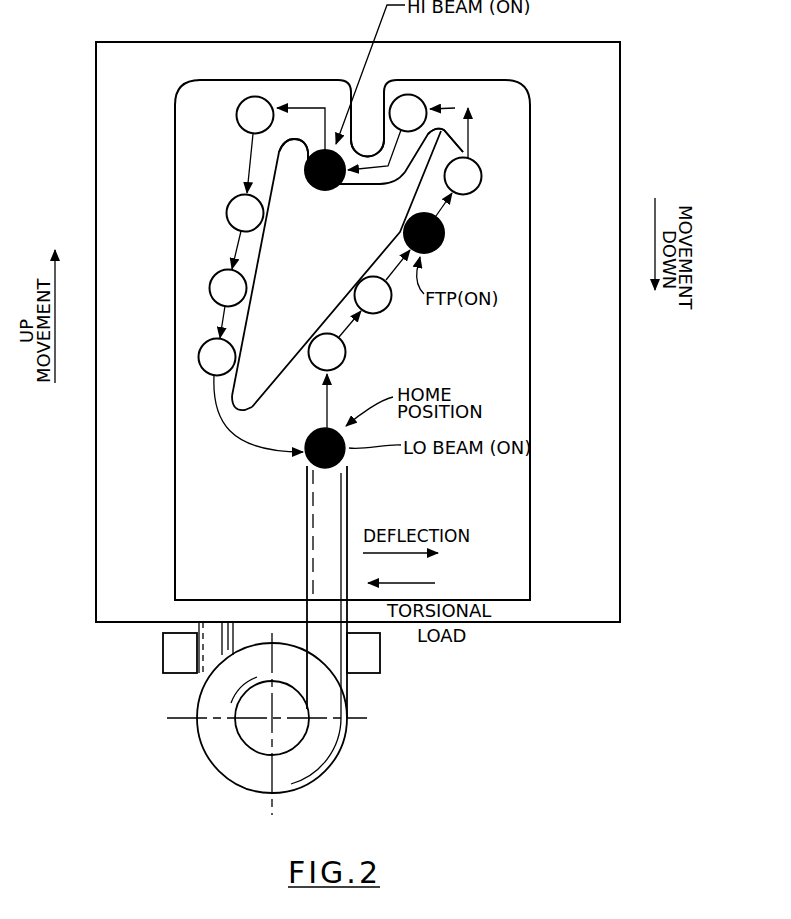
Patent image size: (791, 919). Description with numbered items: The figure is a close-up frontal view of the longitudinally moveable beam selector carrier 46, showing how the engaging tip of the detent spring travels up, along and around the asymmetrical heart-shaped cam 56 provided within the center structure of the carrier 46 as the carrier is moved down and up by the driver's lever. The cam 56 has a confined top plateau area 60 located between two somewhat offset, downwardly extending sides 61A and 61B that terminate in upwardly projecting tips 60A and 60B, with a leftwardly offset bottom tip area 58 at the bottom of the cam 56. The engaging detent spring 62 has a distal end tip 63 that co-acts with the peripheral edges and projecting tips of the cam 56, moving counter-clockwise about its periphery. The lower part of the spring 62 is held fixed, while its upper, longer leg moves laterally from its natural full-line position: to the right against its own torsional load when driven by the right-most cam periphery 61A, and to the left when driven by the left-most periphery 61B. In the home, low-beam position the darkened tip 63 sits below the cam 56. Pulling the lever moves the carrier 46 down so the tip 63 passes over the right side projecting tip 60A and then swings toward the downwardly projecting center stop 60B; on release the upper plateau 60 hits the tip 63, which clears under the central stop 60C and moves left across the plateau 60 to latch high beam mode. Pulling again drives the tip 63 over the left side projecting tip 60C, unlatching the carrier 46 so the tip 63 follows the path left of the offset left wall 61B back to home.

The beam selector carrier 46 is at (86, 402).
The heart-shaped cam 56 is at (306, 299).
The bottom tip area 58 is at (244, 395).
The top plateau area 60 is at (359, 187).
The right side projecting tip 60A is at (445, 142).
The central stop 60B is at (367, 138).
The left side projecting tip 60C is at (298, 153).
The right-most cam periphery 61A is at (378, 266).
The left-most cam periphery 61B is at (247, 312).
The detent spring 62 is at (353, 502).
The distal end tip 63 is at (308, 463).